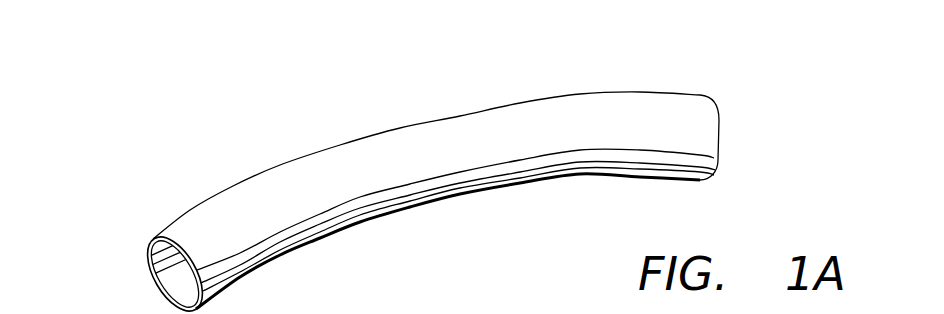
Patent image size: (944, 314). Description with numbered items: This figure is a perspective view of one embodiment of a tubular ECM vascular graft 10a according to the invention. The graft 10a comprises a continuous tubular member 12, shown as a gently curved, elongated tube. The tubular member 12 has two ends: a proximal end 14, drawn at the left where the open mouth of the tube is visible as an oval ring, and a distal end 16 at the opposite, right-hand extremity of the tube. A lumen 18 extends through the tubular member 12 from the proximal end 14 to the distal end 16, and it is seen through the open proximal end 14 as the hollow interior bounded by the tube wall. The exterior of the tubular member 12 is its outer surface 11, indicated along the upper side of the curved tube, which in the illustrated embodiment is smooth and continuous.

The graft 10a is at (478, 81).
The outer surface 11 is at (611, 93).
The tubular member 12 is at (300, 157).
The proximal end 14 is at (168, 226).
The distal end 16 is at (683, 95).
The lumen 18 is at (177, 286).